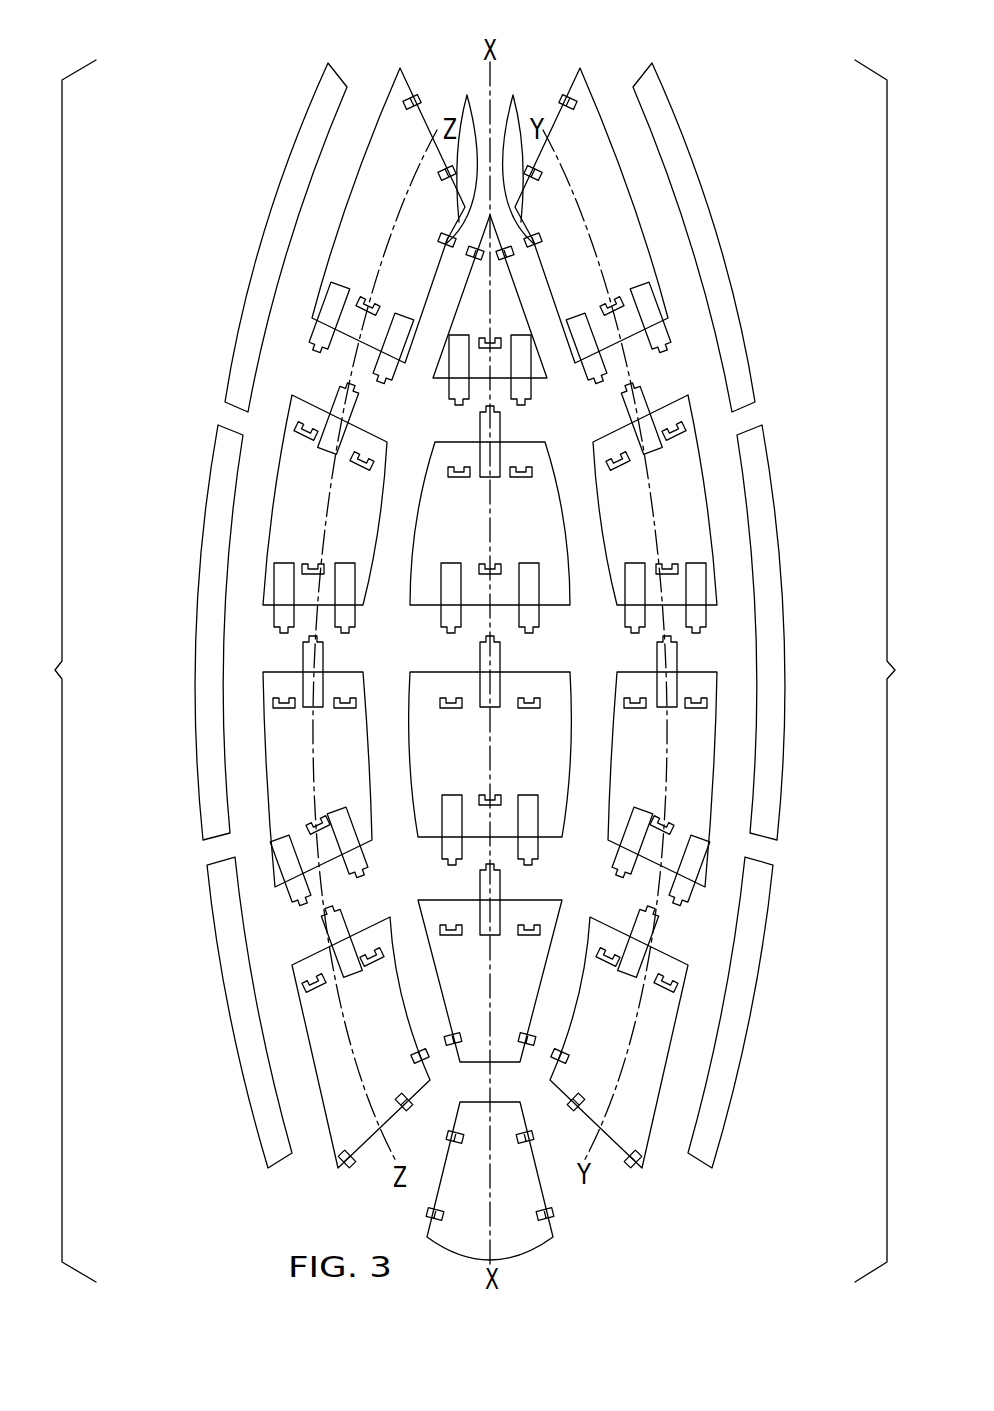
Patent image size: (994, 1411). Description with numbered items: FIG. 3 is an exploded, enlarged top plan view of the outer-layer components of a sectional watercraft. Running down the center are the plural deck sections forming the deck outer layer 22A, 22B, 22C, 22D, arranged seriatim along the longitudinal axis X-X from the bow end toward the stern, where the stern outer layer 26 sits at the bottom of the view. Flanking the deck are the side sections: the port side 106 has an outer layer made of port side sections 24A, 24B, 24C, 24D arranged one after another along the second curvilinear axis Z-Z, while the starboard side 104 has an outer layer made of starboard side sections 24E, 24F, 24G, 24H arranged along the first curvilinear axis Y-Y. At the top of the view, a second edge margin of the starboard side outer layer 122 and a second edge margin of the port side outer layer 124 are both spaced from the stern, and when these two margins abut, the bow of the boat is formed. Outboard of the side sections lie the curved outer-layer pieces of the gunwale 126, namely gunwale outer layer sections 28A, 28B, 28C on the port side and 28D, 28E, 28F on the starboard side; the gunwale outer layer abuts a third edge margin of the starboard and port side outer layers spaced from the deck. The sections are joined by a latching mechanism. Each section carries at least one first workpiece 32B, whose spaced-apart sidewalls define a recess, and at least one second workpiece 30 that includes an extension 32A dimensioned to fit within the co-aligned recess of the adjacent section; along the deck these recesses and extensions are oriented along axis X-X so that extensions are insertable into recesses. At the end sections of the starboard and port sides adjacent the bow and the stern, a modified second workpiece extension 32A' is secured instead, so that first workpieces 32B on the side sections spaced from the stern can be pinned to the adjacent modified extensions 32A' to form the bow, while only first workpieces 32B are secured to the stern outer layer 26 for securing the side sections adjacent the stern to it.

The deck outer layer section 22A is at (530, 328).
The deck outer layer section 22B is at (476, 532).
The deck outer layer section 22C is at (531, 764).
The deck outer layer section 22D is at (488, 1004).
The port side outer layer section 24A is at (383, 244).
The port side outer layer section 24B is at (320, 522).
The port side outer layer section 24C is at (358, 776).
The port side outer layer section 24D is at (403, 1036).
The starboard side outer layer section 24E is at (621, 210).
The starboard side outer layer section 24F is at (699, 512).
The starboard side outer layer section 24G is at (707, 776).
The starboard side outer layer section 24H is at (666, 1065).
The stern outer layer 26 is at (527, 1198).
The gunwale outer layer section 28A is at (243, 300).
The gunwale outer layer section 28B is at (192, 626).
The gunwale outer layer section 28C is at (228, 1013).
The gunwale outer layer section 28D is at (737, 300).
The gunwale outer layer section 28E is at (788, 626).
The gunwale outer layer section 28F is at (752, 1013).
The second workpiece 30 is at (316, 330).
The second workpiece extension 32A is at (433, 712).
The modified second workpiece extension 32A' is at (478, 646).
The first workpiece 32B is at (594, 1235).
The starboard side 104 is at (802, 386).
The port side 106 is at (178, 386).
The second edge margin of the starboard side outer layer 122 is at (547, 100).
The second edge margin of the port side outer layer 124 is at (428, 102).
The gunwale 126 is at (476, 671).